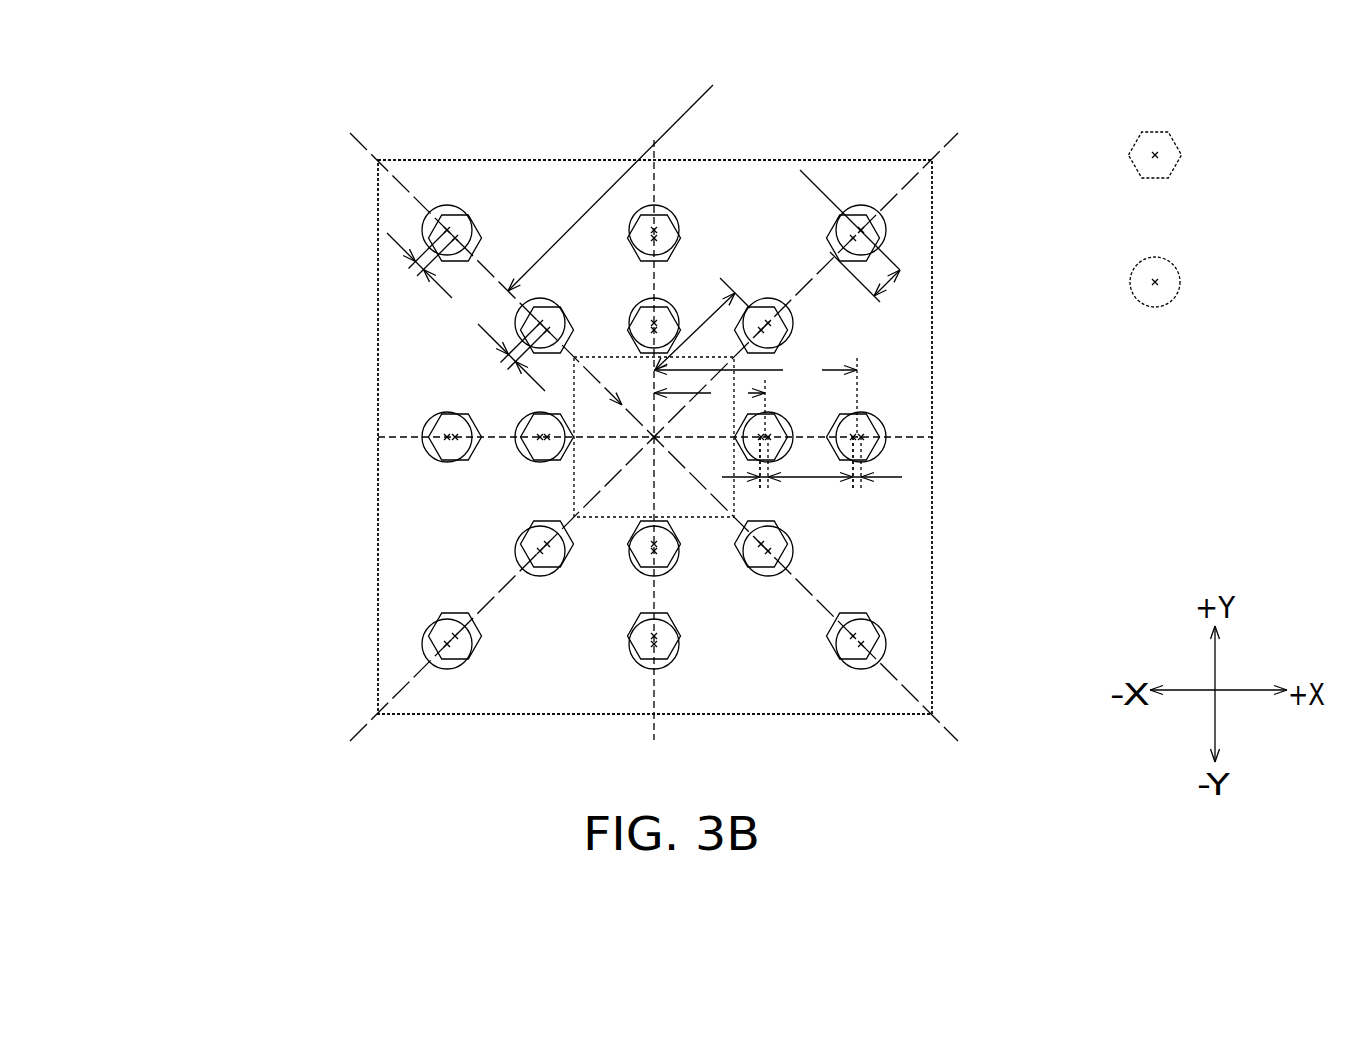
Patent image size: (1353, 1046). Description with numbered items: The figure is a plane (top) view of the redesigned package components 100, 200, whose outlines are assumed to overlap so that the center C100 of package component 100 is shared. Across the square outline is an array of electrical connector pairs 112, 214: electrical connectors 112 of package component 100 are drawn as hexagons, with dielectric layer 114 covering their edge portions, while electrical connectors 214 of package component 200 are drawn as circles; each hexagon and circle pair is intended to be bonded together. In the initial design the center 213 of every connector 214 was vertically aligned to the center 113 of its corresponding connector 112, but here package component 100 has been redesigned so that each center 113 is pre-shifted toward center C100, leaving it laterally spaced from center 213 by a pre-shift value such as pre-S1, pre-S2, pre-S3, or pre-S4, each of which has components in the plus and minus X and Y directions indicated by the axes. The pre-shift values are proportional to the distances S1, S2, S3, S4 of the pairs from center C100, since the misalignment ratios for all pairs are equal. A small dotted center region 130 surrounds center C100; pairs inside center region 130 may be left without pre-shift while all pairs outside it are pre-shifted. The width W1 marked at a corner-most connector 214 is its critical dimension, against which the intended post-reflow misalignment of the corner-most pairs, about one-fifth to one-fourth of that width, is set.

The package component 100 is at (934, 378).
The package component 200 is at (655, 437).
The electrical connector 112 is at (1157, 132).
The center of electrical connector 112 113 is at (654, 636).
The dielectric layer 114 is at (654, 659).
The electrical connector 214 is at (653, 619).
The center of electrical connector 214 213 is at (654, 644).
The center region 130 is at (812, 472).
The center of package component 100 C100 is at (652, 437).
The distance S1 is at (702, 324).
The distance S2 is at (610, 245).
The distance S3 is at (755, 394).
The distance S4 is at (709, 406).
The width W1 is at (865, 240).
The pre-shift value pre-S1 is at (507, 357).
The pre-shift value pre-S2 is at (413, 262).
The pre-shift value pre-S3 is at (861, 487).
The pre-shift value pre-S4 is at (768, 487).